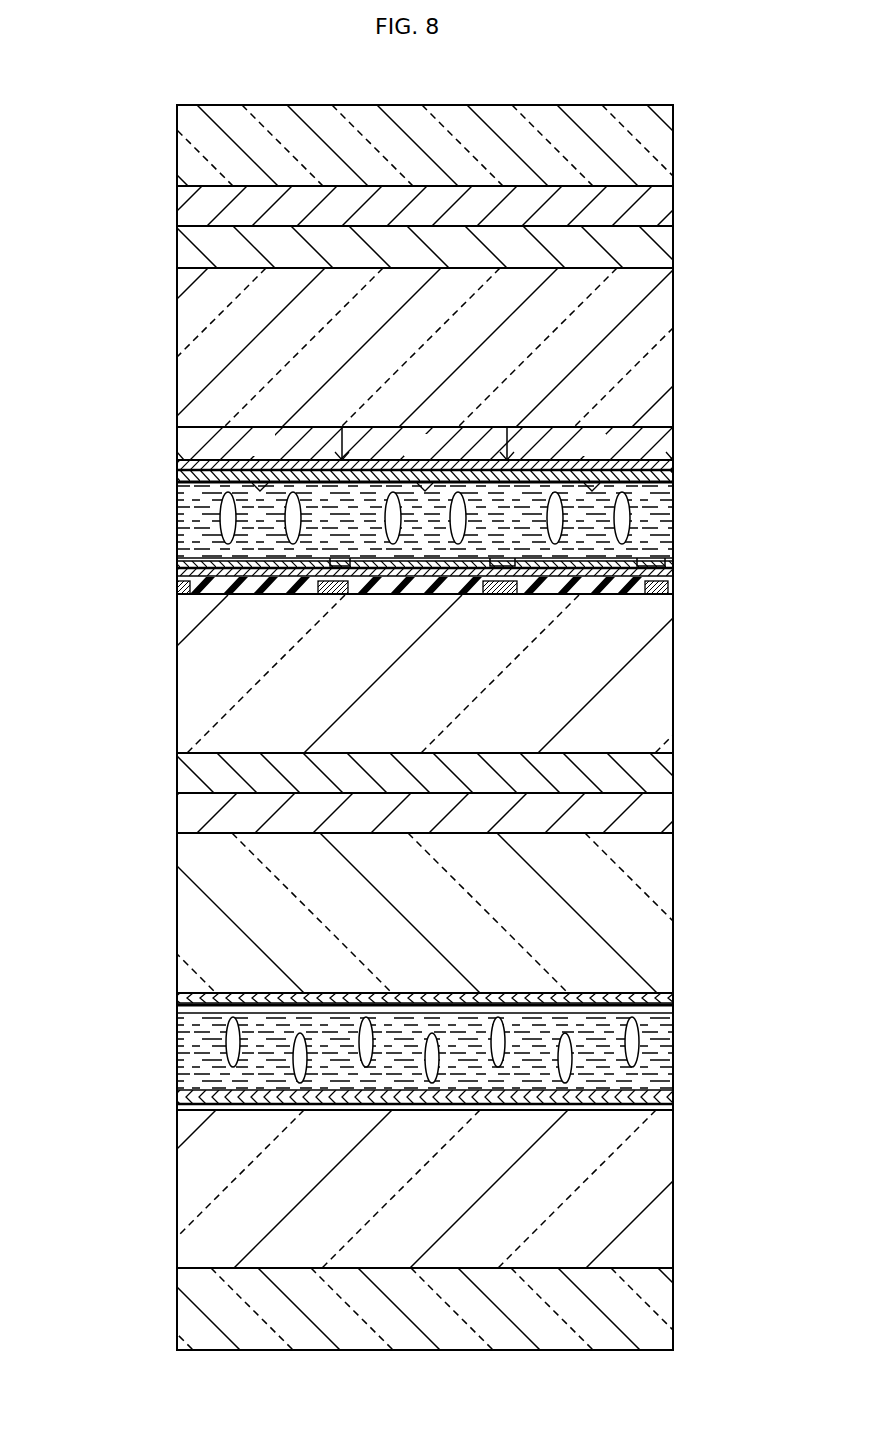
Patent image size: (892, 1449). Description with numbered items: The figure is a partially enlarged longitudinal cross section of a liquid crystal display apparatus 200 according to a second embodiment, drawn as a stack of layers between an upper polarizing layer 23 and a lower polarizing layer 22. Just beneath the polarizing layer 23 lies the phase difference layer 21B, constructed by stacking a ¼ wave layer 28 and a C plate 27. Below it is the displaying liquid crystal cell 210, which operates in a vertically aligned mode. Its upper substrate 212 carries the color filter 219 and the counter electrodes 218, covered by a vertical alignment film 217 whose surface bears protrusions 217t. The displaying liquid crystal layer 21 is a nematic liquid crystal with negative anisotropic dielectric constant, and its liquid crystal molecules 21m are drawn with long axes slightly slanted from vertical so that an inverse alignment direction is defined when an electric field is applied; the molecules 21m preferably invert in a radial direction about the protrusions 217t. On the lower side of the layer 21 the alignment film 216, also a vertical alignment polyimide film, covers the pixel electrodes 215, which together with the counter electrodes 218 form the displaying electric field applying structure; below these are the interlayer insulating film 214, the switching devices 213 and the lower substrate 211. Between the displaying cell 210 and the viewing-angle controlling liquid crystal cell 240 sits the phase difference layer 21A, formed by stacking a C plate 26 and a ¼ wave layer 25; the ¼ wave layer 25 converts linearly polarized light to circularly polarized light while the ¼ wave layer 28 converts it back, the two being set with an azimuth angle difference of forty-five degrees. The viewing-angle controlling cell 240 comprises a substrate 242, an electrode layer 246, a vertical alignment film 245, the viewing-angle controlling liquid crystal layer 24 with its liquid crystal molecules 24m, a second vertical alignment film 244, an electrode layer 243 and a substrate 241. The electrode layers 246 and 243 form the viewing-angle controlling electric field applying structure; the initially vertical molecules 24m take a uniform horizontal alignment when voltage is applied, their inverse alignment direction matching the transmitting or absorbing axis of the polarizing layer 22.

The liquid crystal display apparatus 200 is at (552, 79).
The polarizing layer 23 is at (655, 150).
The ¼ wave layer 28 is at (655, 205).
The C plate 27 is at (655, 250).
The phase difference layer 21B is at (765, 190).
The displaying liquid crystal cell 210 is at (165, 755).
The substrate 212 is at (658, 355).
The color filter 219 is at (185, 445).
The counter electrodes 218 is at (650, 458).
The alignment film 217 is at (635, 481).
The protrusions 217t is at (252, 482).
The displaying liquid crystal layer 21 is at (660, 513).
The liquid crystal molecules 21m is at (218, 512).
The pixel electrodes 215 is at (632, 553).
The alignment film 216 is at (207, 562).
The interlayer insulating film 214 is at (630, 592).
The switching devices 213 is at (660, 592).
The substrate 211 is at (655, 680).
The C plate 26 is at (660, 775).
The ¼ wave layer 25 is at (660, 815).
The phase difference layer 21A is at (750, 763).
The viewing-angle controlling liquid crystal cell 240 is at (158, 1266).
The substrate 242 is at (660, 900).
The electrode layer 246 is at (660, 997).
The alignment film 245 is at (660, 1020).
The viewing-angle controlling liquid crystal layer 24 is at (660, 1060).
The liquid crystal molecules 24m is at (226, 1042).
The alignment film 244 is at (660, 1090).
The electrode layer 243 is at (645, 1107).
The substrate 241 is at (658, 1200).
The polarizing layer 22 is at (658, 1305).